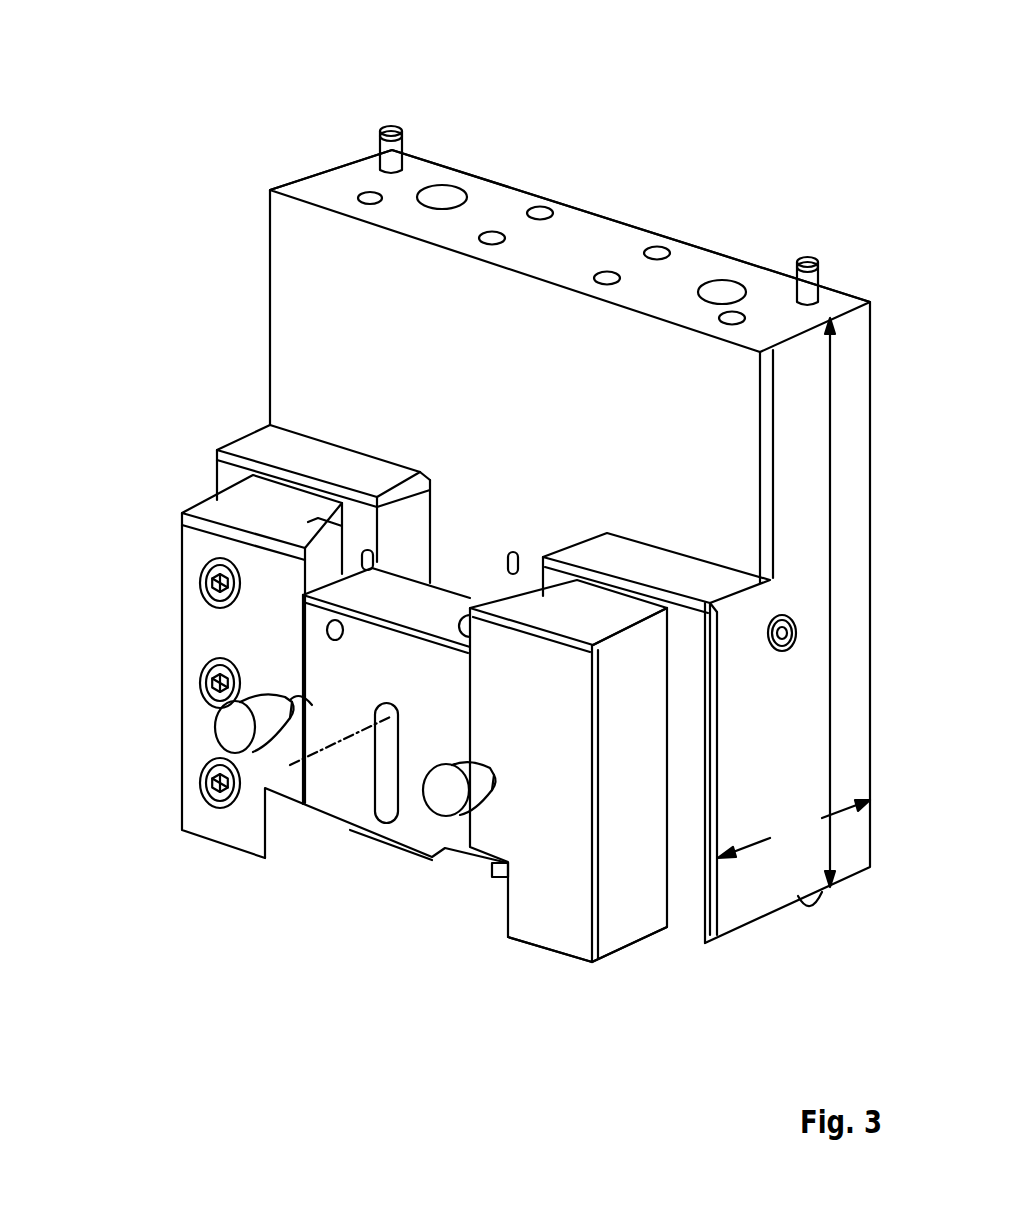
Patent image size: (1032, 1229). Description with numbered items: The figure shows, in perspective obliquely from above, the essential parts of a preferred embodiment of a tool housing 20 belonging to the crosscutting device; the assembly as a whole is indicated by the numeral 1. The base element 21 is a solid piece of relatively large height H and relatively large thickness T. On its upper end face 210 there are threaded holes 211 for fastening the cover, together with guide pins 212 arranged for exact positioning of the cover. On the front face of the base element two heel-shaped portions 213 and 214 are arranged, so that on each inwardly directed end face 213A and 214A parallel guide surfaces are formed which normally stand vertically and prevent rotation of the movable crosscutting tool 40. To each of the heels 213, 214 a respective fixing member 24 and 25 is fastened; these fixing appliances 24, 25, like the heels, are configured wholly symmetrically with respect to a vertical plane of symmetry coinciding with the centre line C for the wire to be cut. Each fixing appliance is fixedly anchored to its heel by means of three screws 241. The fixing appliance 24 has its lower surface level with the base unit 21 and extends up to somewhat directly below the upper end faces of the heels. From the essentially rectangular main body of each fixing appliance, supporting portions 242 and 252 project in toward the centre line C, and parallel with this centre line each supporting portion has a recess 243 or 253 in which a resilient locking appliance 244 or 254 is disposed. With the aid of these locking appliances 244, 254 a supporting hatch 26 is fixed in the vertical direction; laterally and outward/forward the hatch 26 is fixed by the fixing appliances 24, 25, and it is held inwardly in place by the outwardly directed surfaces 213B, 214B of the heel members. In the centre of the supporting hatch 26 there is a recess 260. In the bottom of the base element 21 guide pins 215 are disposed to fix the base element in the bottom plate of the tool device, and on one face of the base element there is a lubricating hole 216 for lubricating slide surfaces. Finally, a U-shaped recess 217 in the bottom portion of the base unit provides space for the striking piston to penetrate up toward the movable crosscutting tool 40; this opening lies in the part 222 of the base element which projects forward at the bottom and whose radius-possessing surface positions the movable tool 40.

The workpiece holding assembly 1 is at (625, 870).
The tool housing 20 is at (186, 262).
The base element 21 is at (223, 470).
The end face 210 is at (618, 247).
The threaded holes 211 is at (462, 192).
The guide pins 212 is at (400, 150).
The heel-shaped portion 213 is at (278, 443).
The inwardly directed end face 213A is at (440, 522).
The outwardly directed surface 213B is at (362, 520).
The heel-shaped portion 214 is at (647, 557).
The inwardly directed end face 214A is at (557, 558).
The outwardly directed surface 214B is at (540, 565).
The guide pins 215 is at (815, 912).
The lubricating hole 216 is at (795, 645).
The recess 217 is at (506, 875).
The part of the base element projecting forward at the bottom 222 is at (370, 832).
The fixing member 24 is at (203, 634).
The screws 241 is at (205, 575).
The supporting portion 242 is at (318, 562).
The recess 243 is at (275, 750).
The resilient locking appliance 244 is at (215, 730).
The fixing member 25 is at (546, 923).
The supporting portion 252 is at (583, 650).
The recess 253 is at (580, 763).
The resilient locking appliance 254 is at (440, 815).
The supporting hatch 26 is at (357, 795).
The recess 260 is at (392, 805).
The movable crosscutting tool 40 is at (480, 580).
The centre line C is at (340, 758).
The height H is at (838, 602).
The thickness T is at (794, 829).